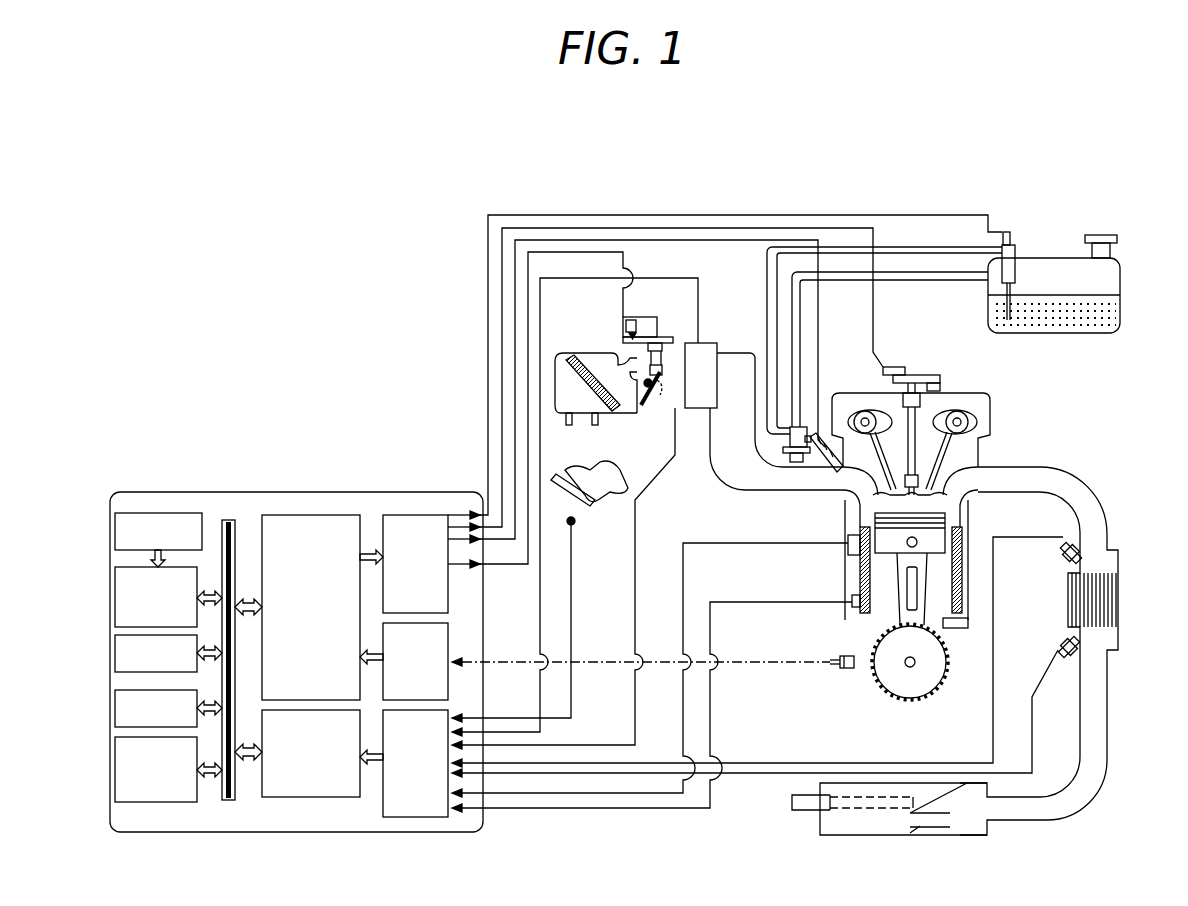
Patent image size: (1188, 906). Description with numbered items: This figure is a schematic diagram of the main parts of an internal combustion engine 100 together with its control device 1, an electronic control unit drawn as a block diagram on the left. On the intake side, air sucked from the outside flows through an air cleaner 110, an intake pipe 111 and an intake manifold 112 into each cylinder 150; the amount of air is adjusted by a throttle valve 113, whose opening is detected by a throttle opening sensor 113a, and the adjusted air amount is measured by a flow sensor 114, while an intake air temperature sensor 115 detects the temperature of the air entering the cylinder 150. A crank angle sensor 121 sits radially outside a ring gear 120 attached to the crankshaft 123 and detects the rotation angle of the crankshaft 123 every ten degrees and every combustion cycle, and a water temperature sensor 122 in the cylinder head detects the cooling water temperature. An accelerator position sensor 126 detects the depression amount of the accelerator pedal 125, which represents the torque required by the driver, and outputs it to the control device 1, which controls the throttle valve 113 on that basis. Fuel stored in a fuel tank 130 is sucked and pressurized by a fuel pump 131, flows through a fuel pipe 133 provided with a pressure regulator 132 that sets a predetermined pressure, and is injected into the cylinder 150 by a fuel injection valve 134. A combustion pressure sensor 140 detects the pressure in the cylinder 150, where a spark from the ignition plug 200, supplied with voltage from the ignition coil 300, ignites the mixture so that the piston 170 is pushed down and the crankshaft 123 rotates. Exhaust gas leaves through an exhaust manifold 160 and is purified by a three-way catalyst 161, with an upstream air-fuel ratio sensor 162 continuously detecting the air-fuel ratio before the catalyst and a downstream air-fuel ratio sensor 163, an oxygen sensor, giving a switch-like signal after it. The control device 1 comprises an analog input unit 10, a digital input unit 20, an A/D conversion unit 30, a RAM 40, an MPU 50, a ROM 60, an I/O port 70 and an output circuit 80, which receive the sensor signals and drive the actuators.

The control device 1 is at (468, 490).
The analog input unit 10 is at (420, 832).
The digital input unit 20 is at (451, 636).
The A/D conversion unit 30 is at (243, 802).
The RAM 40 is at (110, 706).
The MPU 50 is at (110, 588).
The ROM 60 is at (110, 653).
The I/O port 70 is at (318, 515).
The output circuit 80 is at (412, 515).
The internal combustion engine 100 is at (833, 162).
The air cleaner 110 is at (595, 352).
The intake pipe 111 is at (745, 353).
The intake manifold 112 is at (718, 488).
The throttle valve 113 is at (650, 406).
The throttle opening sensor 113a is at (652, 343).
The flow sensor 114 is at (712, 342).
The intake air temperature sensor 115 is at (957, 630).
The ring gear 120 is at (872, 692).
The crank angle sensor 121 is at (835, 657).
The water temperature sensor 122 is at (852, 600).
The crankshaft 123 is at (906, 668).
The accelerator pedal 125 is at (560, 474).
The accelerator position sensor 126 is at (576, 525).
The fuel tank 130 is at (1120, 258).
The fuel pump 131 is at (1015, 245).
The pressure regulator 132 is at (790, 462).
The fuel pipe 133 is at (913, 272).
The fuel injection valve 134 is at (835, 472).
The combustion pressure sensor 140 is at (847, 545).
The cylinder 150 is at (858, 580).
The exhaust manifold 160 is at (965, 634).
The three-way catalyst 161 is at (1068, 598).
The upstream air-fuel ratio sensor 162 is at (1060, 550).
The downstream air-fuel ratio sensor 163 is at (1060, 645).
The piston 170 is at (933, 538).
The ignition plug 200 is at (901, 576).
The ignition coil 300 is at (918, 373).